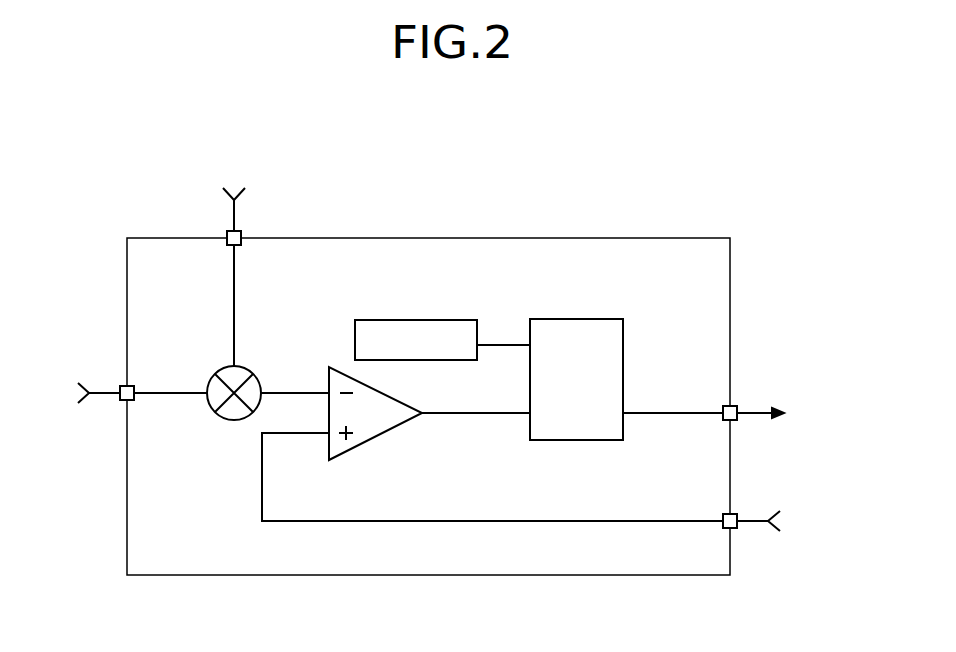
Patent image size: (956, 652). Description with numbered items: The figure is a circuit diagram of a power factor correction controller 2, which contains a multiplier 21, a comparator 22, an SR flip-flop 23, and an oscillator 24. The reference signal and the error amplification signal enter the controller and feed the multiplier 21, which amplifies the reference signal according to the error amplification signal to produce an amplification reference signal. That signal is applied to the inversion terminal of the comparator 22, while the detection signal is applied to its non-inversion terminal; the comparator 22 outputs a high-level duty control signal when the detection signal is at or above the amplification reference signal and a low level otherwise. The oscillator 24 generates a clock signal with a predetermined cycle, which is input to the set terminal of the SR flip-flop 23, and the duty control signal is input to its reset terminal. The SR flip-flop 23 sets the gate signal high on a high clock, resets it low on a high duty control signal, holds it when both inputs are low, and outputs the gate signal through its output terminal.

The power factor correction controller 2 is at (500, 238).
The multiplier 21 is at (231, 420).
The comparator 22 is at (378, 437).
The SR flip-flop 23 is at (577, 318).
The oscillator 24 is at (415, 318).